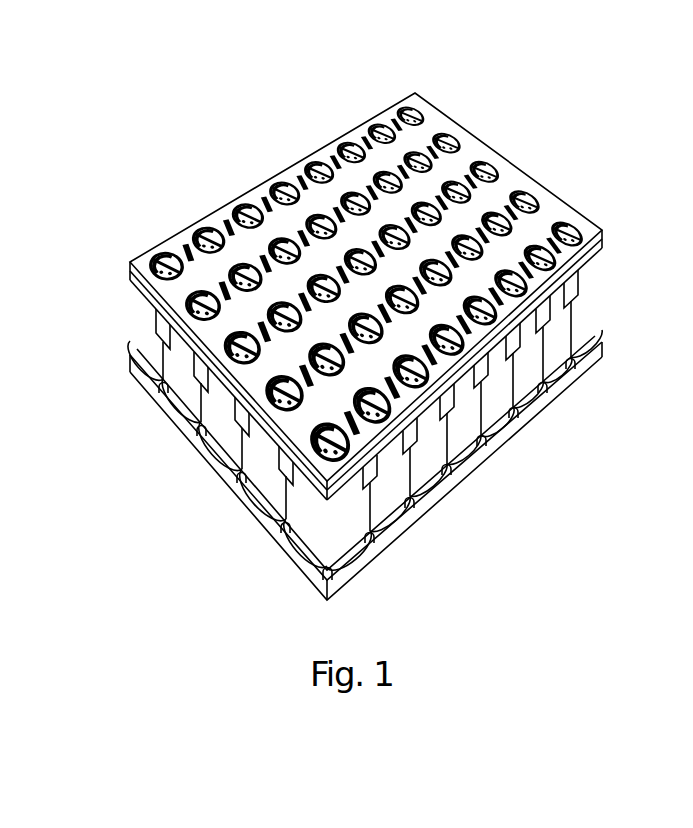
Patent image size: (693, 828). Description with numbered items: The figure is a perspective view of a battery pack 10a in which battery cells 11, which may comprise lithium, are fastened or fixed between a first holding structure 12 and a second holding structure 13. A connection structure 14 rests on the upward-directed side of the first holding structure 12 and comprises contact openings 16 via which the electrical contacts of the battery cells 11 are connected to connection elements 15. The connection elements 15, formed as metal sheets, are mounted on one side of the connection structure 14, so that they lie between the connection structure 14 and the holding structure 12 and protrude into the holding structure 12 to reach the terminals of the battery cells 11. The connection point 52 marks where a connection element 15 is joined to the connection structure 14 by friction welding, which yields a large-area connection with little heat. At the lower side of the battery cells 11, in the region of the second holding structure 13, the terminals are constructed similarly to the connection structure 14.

The battery pack 10a is at (537, 137).
The battery cells 11 is at (583, 303).
The first holding structure 12 is at (600, 255).
The second holding structure 13 is at (600, 353).
The connection structure 14 is at (547, 213).
The connection elements 15 is at (203, 227).
The contact openings 16 is at (393, 107).
The connection point 52 is at (293, 187).